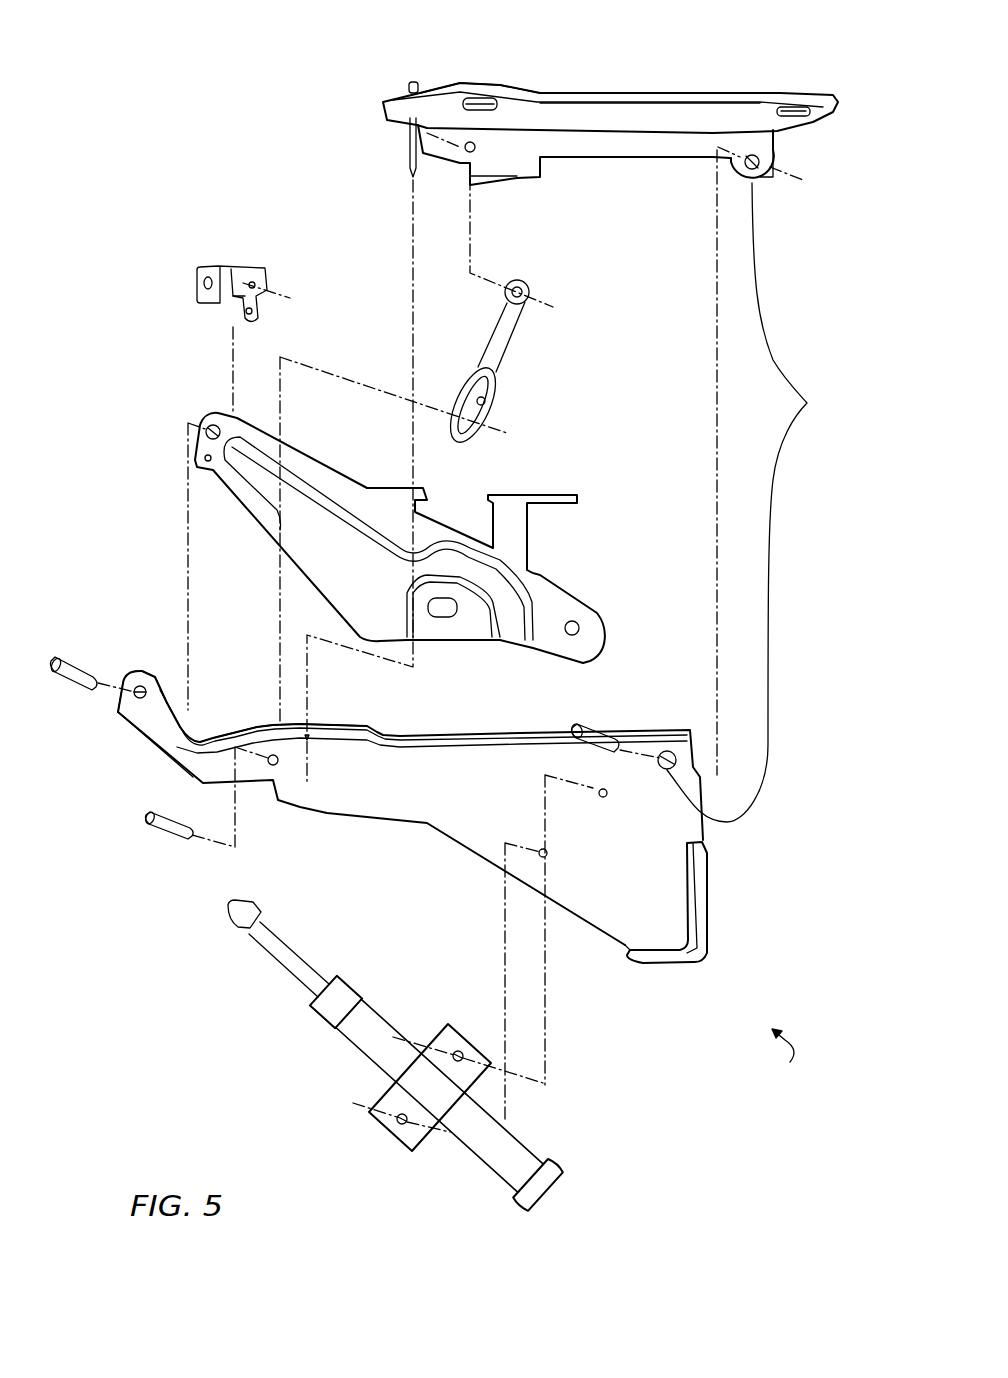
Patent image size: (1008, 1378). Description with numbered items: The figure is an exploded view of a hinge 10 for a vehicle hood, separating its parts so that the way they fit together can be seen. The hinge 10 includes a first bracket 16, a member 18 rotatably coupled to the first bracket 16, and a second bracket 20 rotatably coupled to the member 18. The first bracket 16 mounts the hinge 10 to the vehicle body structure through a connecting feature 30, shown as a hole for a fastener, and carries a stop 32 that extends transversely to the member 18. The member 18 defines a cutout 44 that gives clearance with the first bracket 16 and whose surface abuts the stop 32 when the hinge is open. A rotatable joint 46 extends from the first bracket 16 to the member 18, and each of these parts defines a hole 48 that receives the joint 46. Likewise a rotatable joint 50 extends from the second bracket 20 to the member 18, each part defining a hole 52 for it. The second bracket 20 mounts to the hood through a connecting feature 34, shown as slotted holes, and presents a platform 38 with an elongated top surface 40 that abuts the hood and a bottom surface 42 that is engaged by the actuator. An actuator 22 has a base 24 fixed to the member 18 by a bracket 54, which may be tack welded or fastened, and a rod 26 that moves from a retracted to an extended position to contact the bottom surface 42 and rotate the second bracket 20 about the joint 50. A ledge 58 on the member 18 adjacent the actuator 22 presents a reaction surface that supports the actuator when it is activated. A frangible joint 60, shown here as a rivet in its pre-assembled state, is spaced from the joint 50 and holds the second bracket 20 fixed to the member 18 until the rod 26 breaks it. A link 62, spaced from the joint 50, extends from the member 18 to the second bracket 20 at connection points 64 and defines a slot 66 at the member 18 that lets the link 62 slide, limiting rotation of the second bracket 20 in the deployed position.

The hinge 10 is at (777, 1055).
The first bracket 16 is at (396, 542).
The member 18 is at (453, 636).
The second bracket 20 is at (612, 148).
The actuator 22 is at (379, 1055).
The base 24 is at (495, 1165).
The rod 26 is at (272, 946).
The connecting feature 30 is at (447, 608).
The stop 32 is at (213, 265).
The connecting feature 34 is at (482, 98).
The platform 38 is at (612, 96).
The top surface 40 is at (560, 92).
The bottom surface 42 is at (672, 110).
The cutout 44 is at (205, 740).
The rotatable joint 46 is at (78, 662).
The hole 48 is at (140, 687).
The rotatable joint 50 is at (590, 730).
The hole 52 is at (807, 403).
The bracket 54 is at (436, 1103).
The ledge 58 is at (706, 895).
The frangible joint 60 is at (412, 80).
The link 62 is at (508, 313).
The connection point 64 is at (474, 152).
The slot 66 is at (483, 397).